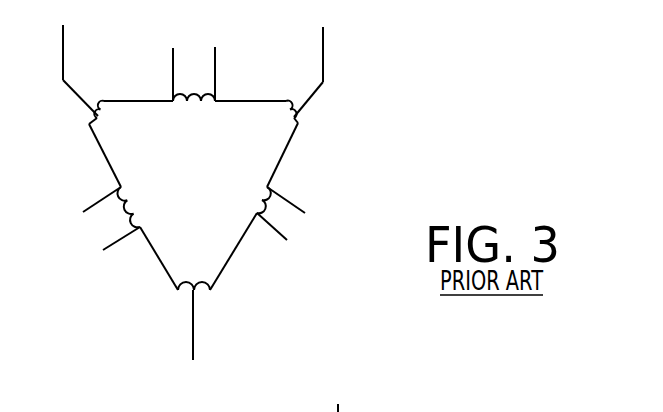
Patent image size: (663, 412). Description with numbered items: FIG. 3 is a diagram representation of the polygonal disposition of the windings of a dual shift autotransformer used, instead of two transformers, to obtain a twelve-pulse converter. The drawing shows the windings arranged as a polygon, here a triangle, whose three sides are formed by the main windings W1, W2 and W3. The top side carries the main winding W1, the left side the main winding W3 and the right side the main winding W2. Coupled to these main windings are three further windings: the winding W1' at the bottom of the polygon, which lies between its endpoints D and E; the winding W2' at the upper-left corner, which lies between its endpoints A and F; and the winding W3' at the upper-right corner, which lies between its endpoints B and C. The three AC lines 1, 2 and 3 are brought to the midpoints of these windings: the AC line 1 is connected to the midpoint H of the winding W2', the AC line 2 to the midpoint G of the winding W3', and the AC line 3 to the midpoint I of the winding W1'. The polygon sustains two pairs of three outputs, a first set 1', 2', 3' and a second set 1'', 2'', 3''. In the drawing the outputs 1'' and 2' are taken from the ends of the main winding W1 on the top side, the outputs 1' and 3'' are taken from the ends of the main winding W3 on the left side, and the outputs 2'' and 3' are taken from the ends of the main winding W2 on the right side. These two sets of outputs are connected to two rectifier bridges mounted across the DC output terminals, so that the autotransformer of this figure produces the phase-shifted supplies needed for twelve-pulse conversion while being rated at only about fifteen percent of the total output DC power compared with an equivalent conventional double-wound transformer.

The AC line 1 is at (80, 58).
The AC line 2 is at (308, 59).
The AC line 3 is at (202, 334).
The output 1' is at (95, 193).
The output 1'' is at (162, 64).
The output 2' is at (226, 65).
The output 2'' is at (300, 198).
The output 3' is at (272, 247).
The output 3'' is at (121, 255).
The main winding W1 is at (194, 118).
The winding W1' is at (196, 260).
The main winding W2 is at (247, 195).
The winding W2' is at (113, 126).
The main winding W3 is at (139, 202).
The winding W3' is at (272, 122).
The endpoint A is at (104, 101).
The endpoint B is at (298, 123).
The endpoint C is at (286, 101).
The endpoint D is at (178, 294).
The endpoint E is at (210, 291).
The endpoint F is at (89, 124).
The midpoint G is at (297, 116).
The midpoint H is at (93, 112).
The midpoint I is at (198, 290).